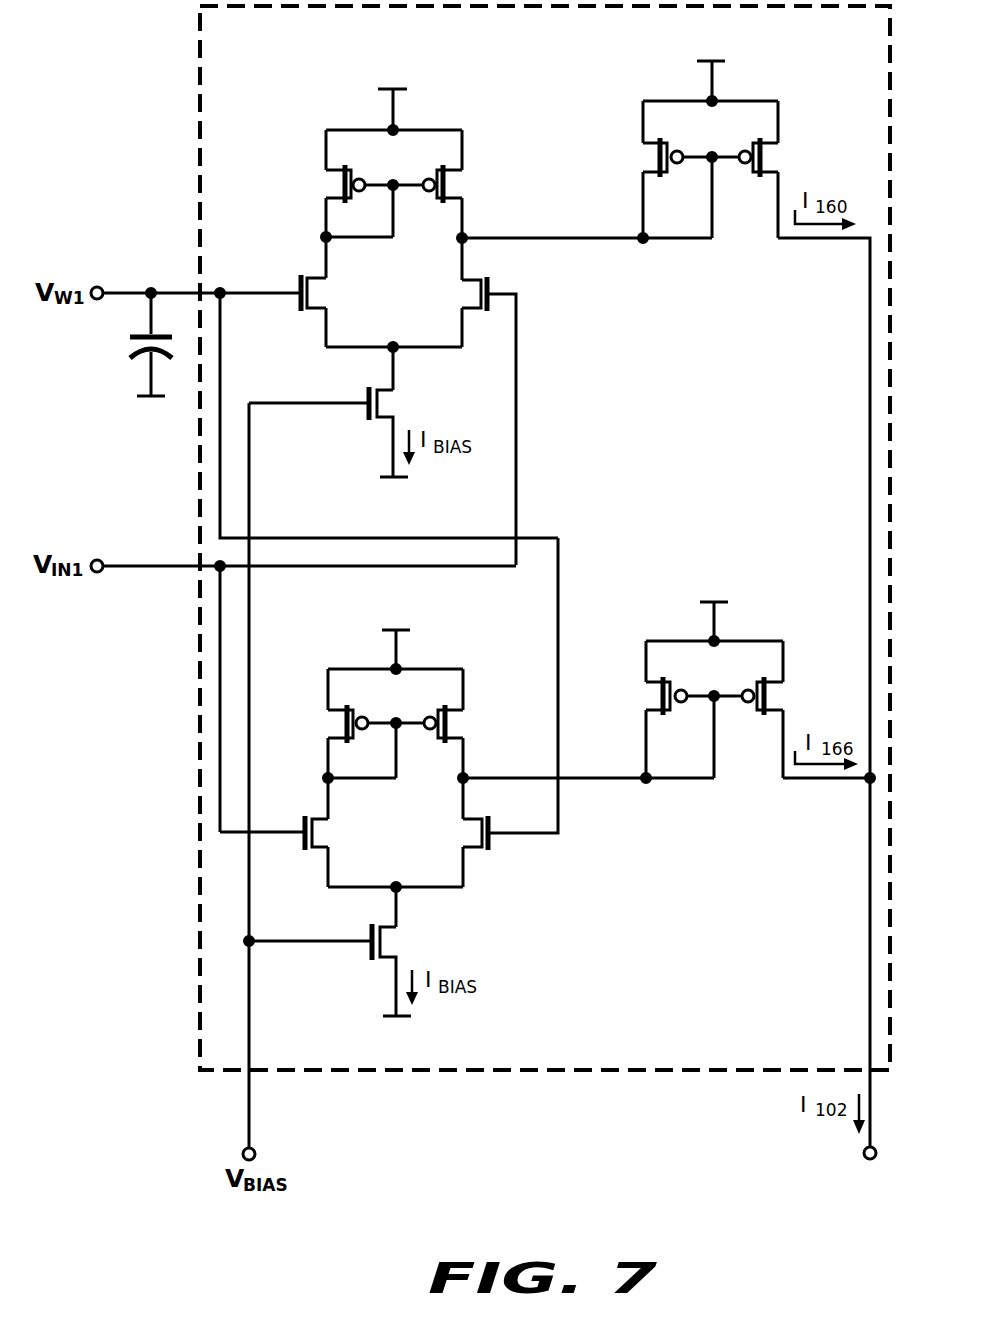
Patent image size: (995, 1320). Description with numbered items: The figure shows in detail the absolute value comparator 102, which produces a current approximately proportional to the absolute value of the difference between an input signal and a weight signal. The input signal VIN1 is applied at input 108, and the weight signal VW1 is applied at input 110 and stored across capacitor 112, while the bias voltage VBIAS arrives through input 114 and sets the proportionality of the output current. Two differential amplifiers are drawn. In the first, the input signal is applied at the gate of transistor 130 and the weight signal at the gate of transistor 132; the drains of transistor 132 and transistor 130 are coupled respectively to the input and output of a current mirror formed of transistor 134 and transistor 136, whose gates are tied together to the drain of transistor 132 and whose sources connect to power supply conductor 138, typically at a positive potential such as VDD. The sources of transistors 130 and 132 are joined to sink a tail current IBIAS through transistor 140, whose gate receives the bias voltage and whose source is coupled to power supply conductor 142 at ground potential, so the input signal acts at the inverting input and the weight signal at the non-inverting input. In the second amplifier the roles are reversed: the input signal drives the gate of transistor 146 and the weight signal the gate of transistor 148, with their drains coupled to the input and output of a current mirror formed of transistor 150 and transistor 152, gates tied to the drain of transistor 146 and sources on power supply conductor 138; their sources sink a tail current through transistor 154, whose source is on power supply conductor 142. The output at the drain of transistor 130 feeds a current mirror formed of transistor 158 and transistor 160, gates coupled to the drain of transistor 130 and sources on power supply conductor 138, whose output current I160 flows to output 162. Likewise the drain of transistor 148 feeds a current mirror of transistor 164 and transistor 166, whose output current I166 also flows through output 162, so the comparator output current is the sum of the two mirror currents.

The absolute value comparator 102 is at (514, 538).
The input 108 is at (303, 546).
The input 110 is at (155, 273).
The capacitor 112 is at (121, 344).
The input 114 is at (279, 781).
The transistor 130 is at (462, 414).
The transistor 132 is at (273, 283).
The transistor 134 is at (330, 179).
The transistor 136 is at (456, 178).
The power supply conductor 138 is at (539, 325).
The transistor 140 is at (350, 424).
The power supply conductor 142 is at (379, 769).
The transistor 146 is at (302, 826).
The transistor 148 is at (510, 707).
The transistor 150 is at (334, 719).
The transistor 152 is at (458, 718).
The transistor 154 is at (353, 963).
The transistor 158 is at (650, 151).
The transistor 160 is at (774, 150).
The output 162 is at (854, 1174).
The transistor 164 is at (652, 691).
The transistor 166 is at (775, 690).